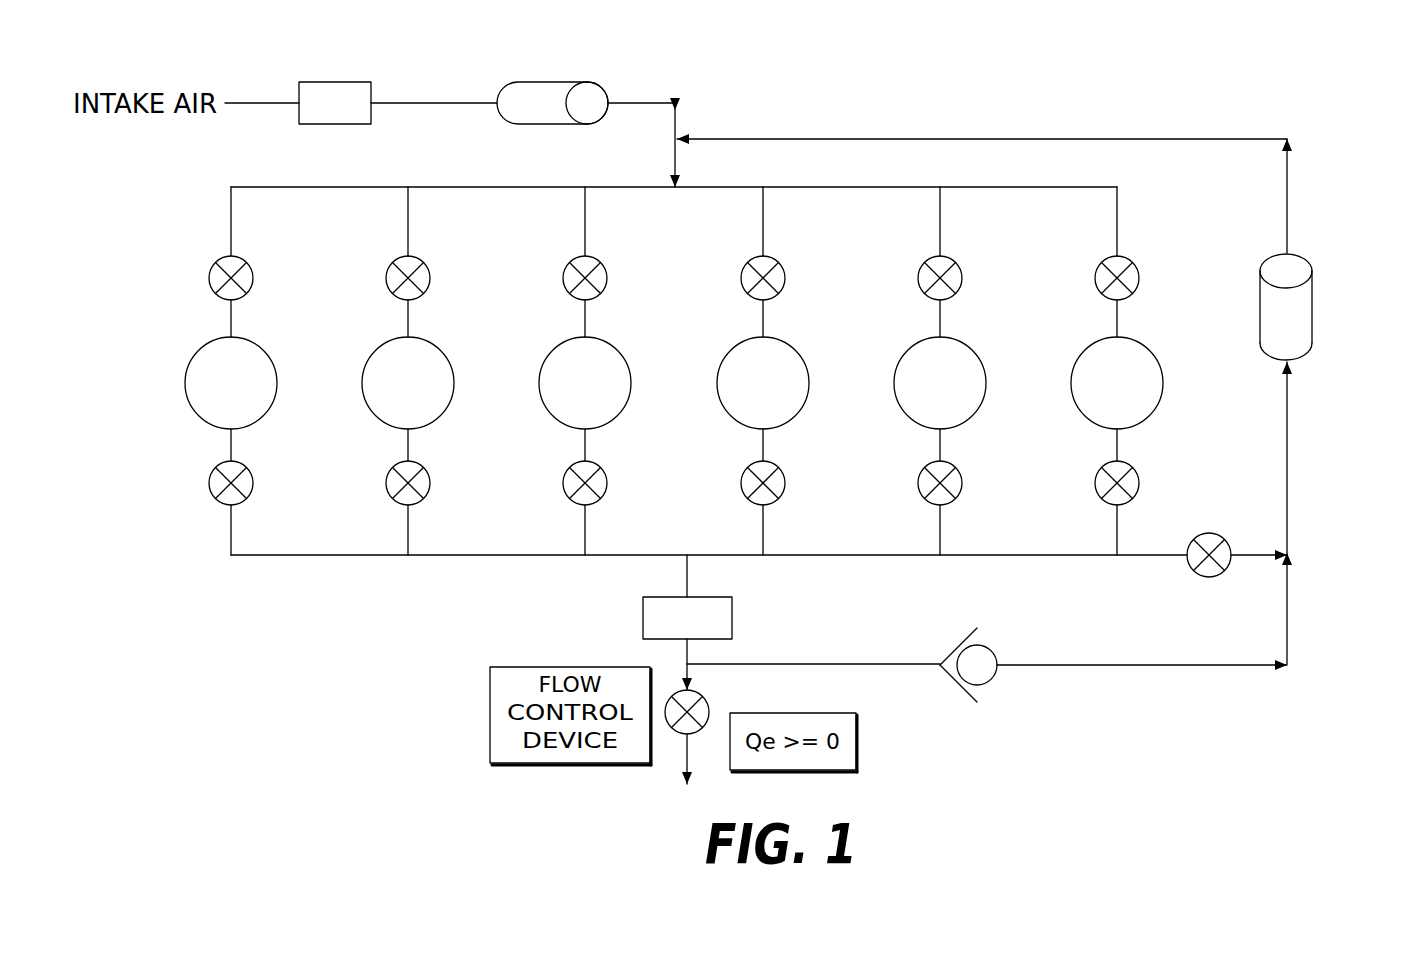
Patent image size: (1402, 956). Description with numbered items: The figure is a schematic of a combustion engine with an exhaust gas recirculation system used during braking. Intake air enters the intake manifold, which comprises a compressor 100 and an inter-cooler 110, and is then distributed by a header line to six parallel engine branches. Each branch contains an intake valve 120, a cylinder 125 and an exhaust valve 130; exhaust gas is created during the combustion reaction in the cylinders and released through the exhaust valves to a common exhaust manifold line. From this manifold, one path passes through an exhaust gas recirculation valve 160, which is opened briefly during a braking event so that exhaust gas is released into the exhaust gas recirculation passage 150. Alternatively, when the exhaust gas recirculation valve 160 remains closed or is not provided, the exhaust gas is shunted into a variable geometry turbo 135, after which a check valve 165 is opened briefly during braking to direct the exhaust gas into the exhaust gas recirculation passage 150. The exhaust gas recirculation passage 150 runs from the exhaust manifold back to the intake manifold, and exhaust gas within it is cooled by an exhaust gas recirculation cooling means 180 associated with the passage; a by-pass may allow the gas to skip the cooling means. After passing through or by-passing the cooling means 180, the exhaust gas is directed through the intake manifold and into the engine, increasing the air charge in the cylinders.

The compressor 100 is at (327, 124).
The inter-cooler 110 is at (537, 124).
The intake valve 120 is at (208, 270).
The cylinder 125 is at (185, 382).
The exhaust valve 130 is at (208, 480).
The variable geometry turbo 135 is at (643, 617).
The exhaust gas recirculation passage 150 is at (1095, 139).
The exhaust gas recirculation valve 160 is at (1203, 575).
The check valve 165 is at (993, 678).
The exhaust gas recirculation cooling means 180 is at (1312, 279).